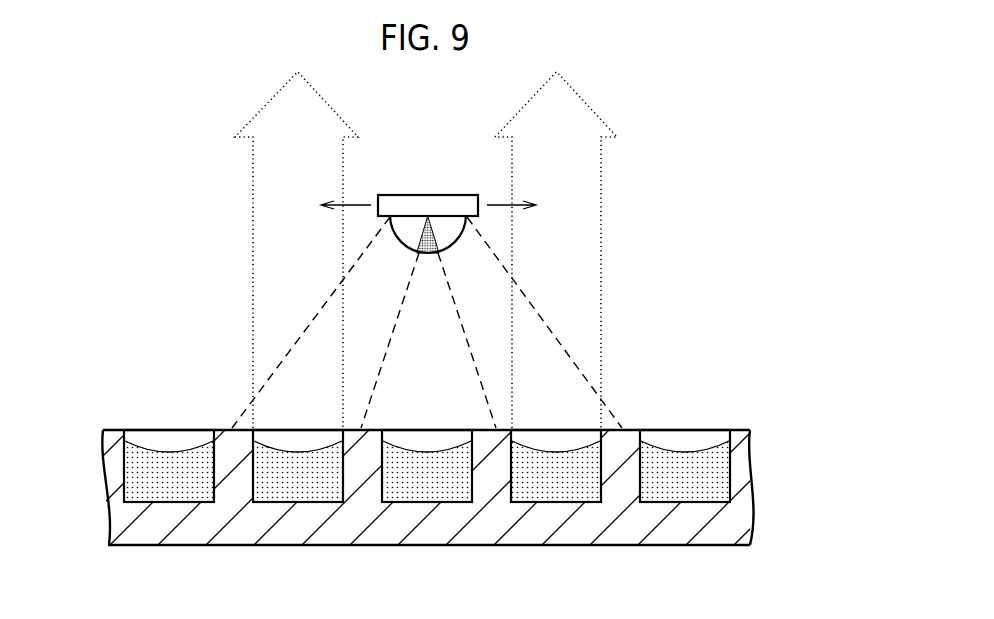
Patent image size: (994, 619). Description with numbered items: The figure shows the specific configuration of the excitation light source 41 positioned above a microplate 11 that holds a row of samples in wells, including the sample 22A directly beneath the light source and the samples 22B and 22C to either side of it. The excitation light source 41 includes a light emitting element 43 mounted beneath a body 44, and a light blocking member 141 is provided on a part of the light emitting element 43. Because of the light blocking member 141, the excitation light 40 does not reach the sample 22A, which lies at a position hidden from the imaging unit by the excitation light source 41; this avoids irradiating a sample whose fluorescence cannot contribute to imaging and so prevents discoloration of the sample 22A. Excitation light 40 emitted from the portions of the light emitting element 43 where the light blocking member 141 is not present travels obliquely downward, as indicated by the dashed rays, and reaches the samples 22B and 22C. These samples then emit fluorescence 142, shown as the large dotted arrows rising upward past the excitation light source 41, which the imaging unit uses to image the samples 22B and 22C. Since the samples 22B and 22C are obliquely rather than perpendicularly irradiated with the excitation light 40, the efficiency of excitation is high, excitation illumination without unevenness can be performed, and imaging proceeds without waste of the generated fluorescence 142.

The microplate 11 is at (740, 432).
The sample 22A is at (428, 492).
The sample 22B is at (300, 496).
The sample 22C is at (557, 492).
The excitation light 40 is at (296, 343).
The excitation light source 41 is at (466, 219).
The light emitting element 43 is at (452, 233).
The light source body 44 is at (444, 202).
The light blocking member 141 is at (425, 256).
The fluorescence 142 is at (253, 218).